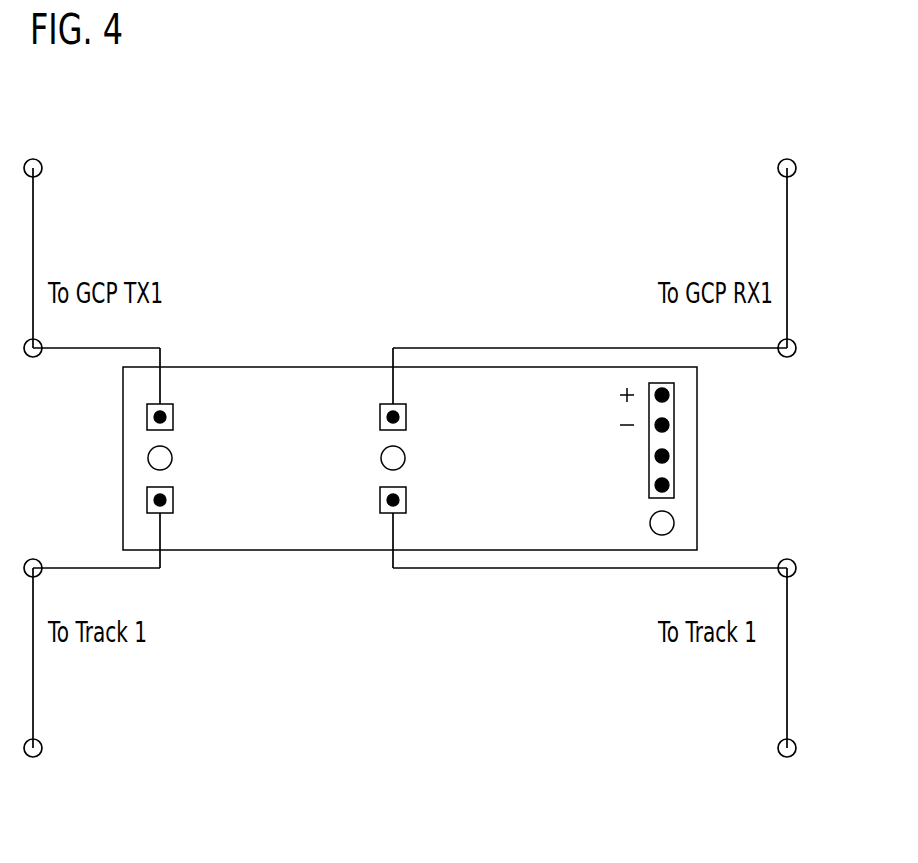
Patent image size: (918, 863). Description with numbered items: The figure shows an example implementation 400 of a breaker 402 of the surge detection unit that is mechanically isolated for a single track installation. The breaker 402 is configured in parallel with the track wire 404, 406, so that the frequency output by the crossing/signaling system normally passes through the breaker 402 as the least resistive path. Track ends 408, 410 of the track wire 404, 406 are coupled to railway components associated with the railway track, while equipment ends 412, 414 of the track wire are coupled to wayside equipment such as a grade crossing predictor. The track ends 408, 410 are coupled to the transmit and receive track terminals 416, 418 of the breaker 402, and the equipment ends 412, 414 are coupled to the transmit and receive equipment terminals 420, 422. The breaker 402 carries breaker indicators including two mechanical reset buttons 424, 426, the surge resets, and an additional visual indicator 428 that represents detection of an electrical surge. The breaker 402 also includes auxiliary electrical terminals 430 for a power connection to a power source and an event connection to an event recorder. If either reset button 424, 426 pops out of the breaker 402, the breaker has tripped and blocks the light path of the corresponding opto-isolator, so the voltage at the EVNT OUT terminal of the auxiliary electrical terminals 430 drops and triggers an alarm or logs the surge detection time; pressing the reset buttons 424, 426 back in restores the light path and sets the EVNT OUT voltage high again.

The example implementation 400 is at (366, 153).
The breaker 402 is at (300, 367).
The track wire 404 is at (33, 250).
The track wire 406 is at (787, 250).
The track end 408 is at (36, 746).
The track end 410 is at (784, 746).
The equipment end 412 is at (36, 166).
The equipment end 414 is at (784, 166).
The transmit track terminal 416 is at (147, 500).
The receive track terminal 418 is at (380, 500).
The transmit equipment terminal 420 is at (147, 417).
The receive equipment terminal 422 is at (380, 417).
The mechanical reset button 424 is at (148, 458).
The mechanical reset button 426 is at (381, 458).
The visual indicator 428 is at (674, 523).
The auxiliary electrical terminals 430 is at (674, 441).